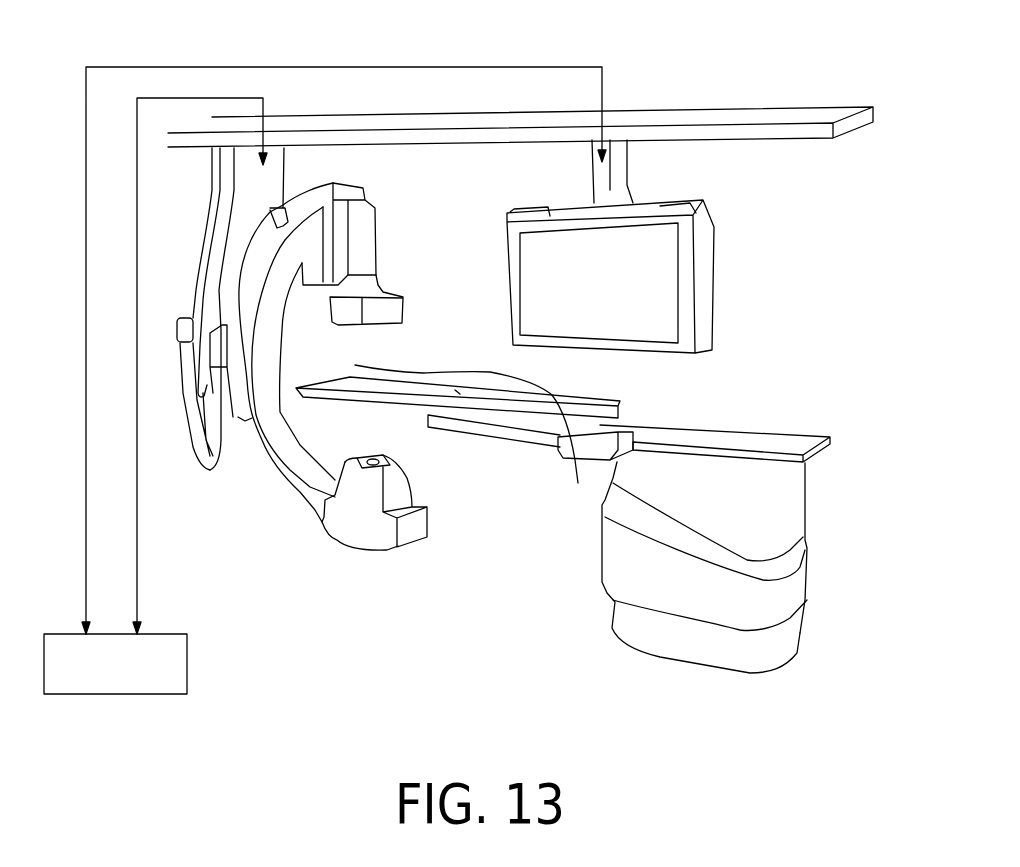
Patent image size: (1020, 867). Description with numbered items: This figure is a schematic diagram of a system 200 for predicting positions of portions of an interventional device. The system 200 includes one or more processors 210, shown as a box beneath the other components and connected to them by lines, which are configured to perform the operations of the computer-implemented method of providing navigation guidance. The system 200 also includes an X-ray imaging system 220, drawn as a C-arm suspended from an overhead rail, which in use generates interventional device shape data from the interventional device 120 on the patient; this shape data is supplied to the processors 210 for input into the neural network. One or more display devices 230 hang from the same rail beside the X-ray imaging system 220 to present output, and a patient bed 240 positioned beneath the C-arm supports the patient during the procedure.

The system 200 is at (670, 40).
The processors 210 is at (325, 380).
The X-ray imaging system 220 is at (383, 227).
The display devices 230 is at (723, 277).
The patient bed 240 is at (802, 423).
The interventional device 120 is at (567, 477).